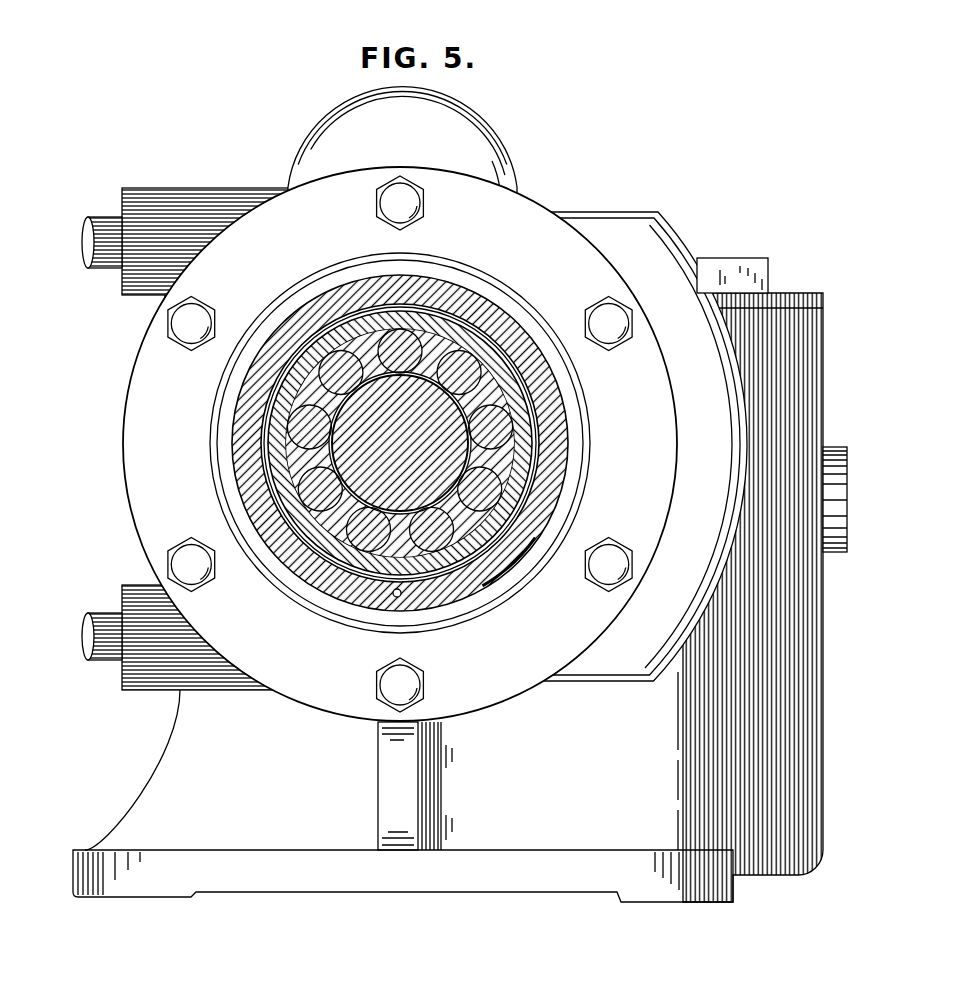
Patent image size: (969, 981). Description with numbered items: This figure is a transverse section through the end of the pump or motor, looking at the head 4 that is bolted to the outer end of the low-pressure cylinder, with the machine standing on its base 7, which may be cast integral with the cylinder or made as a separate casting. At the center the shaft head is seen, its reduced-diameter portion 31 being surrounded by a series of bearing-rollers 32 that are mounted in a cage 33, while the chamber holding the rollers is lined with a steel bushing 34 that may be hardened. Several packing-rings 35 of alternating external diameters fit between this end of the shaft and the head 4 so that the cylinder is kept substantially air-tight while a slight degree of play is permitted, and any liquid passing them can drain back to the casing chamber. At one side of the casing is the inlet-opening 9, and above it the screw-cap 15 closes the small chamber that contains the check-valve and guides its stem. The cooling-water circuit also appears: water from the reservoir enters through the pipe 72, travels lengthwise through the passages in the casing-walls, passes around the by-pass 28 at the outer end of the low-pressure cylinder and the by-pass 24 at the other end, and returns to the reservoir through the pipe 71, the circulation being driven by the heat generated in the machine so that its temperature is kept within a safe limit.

The head 4 is at (400, 444).
The base 7 is at (403, 888).
The inlet-opening 9 is at (847, 463).
The screw-cap 15 is at (757, 282).
The by-pass 24 is at (402, 140).
The by-pass 28 is at (494, 557).
The portion of the head 31 is at (400, 443).
The bearing-rollers 32 is at (399, 440).
The cage 33 is at (520, 427).
The steel bushing 34 is at (520, 462).
The packing-rings 35 is at (402, 592).
The pipe 71 is at (192, 241).
The pipe 72 is at (191, 637).